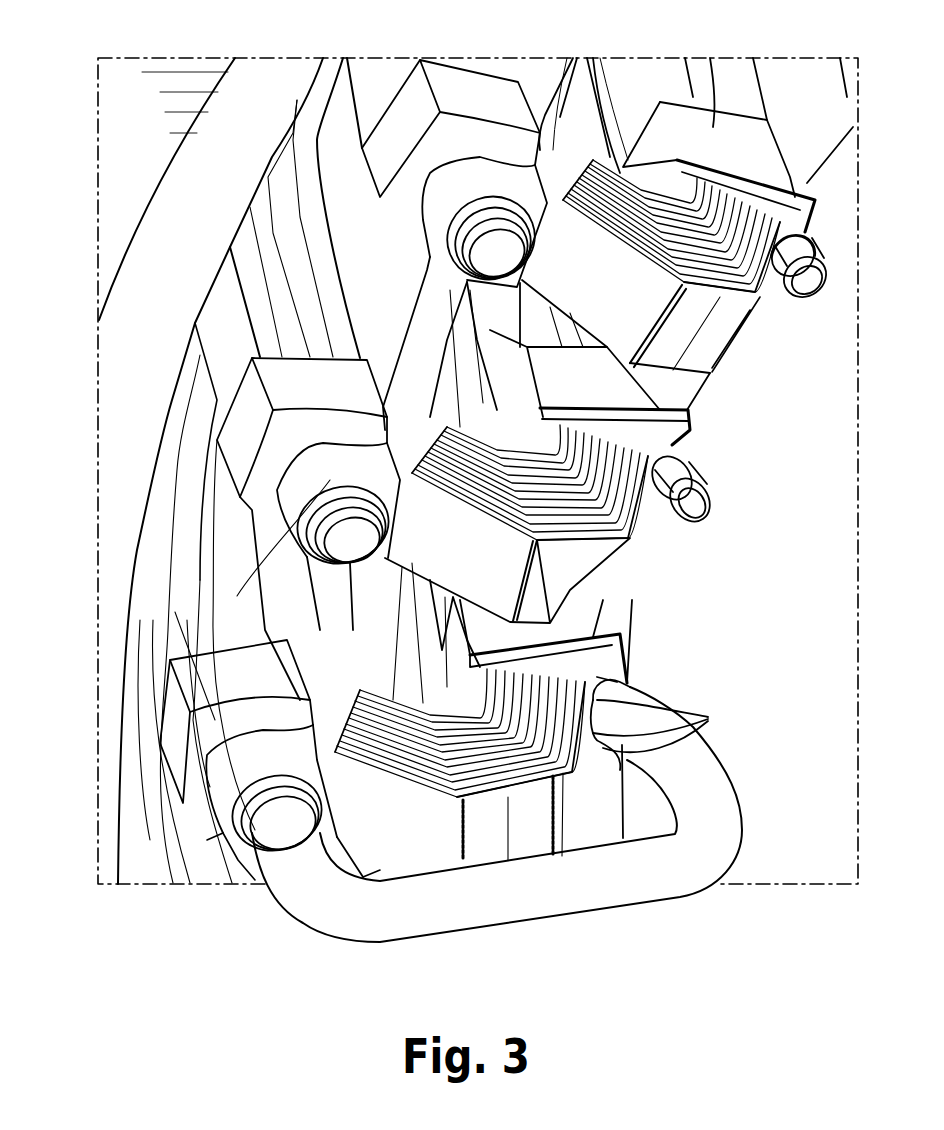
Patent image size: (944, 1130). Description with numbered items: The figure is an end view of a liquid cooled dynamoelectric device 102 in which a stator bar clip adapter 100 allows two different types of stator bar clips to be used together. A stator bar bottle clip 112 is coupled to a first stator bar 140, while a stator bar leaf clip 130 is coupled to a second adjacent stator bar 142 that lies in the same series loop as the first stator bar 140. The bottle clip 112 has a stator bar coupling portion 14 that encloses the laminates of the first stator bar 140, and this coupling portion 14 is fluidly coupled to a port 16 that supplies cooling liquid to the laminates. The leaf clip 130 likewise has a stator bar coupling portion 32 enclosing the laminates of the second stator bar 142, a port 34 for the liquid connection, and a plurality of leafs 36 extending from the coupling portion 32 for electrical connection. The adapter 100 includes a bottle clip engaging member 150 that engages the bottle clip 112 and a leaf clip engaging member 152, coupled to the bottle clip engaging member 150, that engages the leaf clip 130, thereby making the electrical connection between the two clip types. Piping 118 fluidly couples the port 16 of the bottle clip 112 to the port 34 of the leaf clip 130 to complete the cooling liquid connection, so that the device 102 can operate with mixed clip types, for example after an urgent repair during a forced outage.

The stator bar coupling portion 14 is at (453, 93).
The port 16 is at (483, 258).
The stator bar coupling portion 32 is at (620, 636).
The port 34 is at (687, 500).
The leafs 36 is at (667, 685).
The stator bar clip adapter 100 is at (207, 840).
The dynamoelectric device 102 is at (183, 488).
The stator bar bottle clip 112 is at (235, 603).
The piping 118 is at (607, 883).
The stator bar leaf clip 130 is at (715, 126).
The first stator bar 140 is at (173, 612).
The second stator bar 142 is at (435, 612).
The bottle clip engaging member 150 is at (200, 838).
The leaf clip engaging member 152 is at (383, 862).